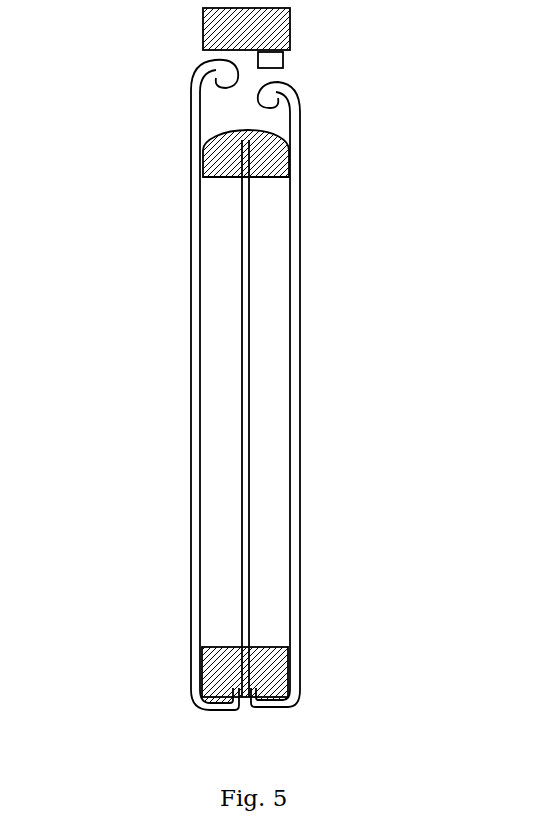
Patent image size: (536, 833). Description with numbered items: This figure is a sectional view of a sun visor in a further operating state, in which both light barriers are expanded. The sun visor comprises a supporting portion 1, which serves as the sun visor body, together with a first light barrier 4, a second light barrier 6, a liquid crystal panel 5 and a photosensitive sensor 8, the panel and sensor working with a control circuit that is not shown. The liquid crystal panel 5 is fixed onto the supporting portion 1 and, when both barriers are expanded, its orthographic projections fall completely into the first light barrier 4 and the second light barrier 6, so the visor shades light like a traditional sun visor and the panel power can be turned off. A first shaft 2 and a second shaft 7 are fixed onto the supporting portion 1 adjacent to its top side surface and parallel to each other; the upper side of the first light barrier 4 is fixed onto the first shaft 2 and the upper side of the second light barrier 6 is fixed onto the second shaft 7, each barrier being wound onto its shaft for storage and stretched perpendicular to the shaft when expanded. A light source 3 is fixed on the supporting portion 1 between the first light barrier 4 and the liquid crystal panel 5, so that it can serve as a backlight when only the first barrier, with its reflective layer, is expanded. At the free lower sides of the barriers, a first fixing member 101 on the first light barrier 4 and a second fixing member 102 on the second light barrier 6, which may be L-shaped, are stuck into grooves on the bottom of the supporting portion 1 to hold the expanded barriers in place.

The supporting portion 1 is at (203, 20).
The first shaft 2 is at (193, 86).
The light source 3 is at (201, 187).
The first light barrier 4 is at (191, 483).
The liquid crystal panel 5 is at (250, 395).
The second light barrier 6 is at (300, 292).
The second shaft 7 is at (297, 92).
The photosensitive sensor 8 is at (285, 62).
The first fixing member 101 is at (202, 700).
The second fixing member 102 is at (292, 690).